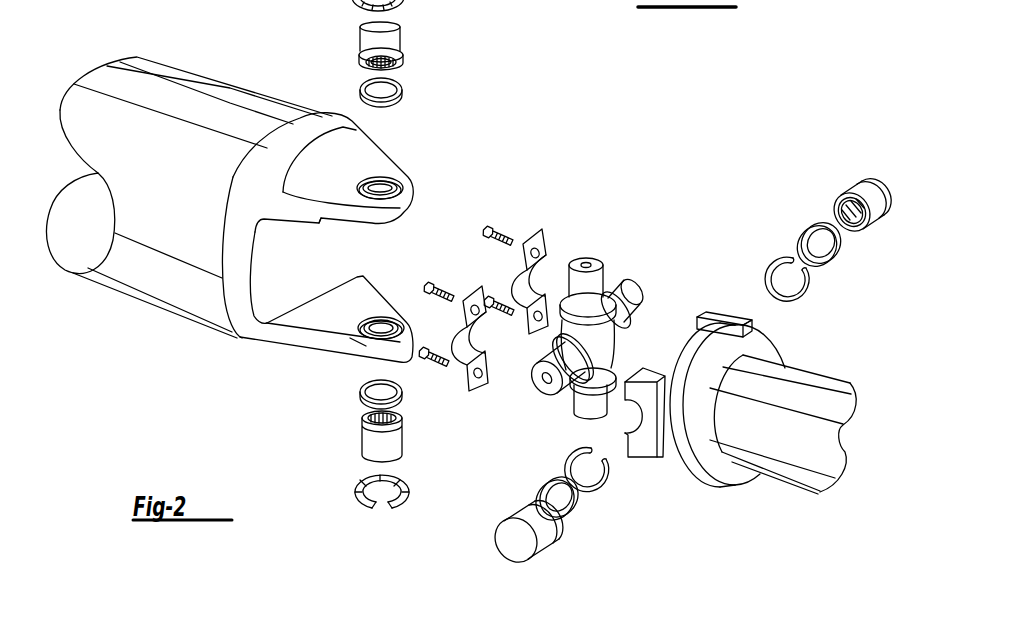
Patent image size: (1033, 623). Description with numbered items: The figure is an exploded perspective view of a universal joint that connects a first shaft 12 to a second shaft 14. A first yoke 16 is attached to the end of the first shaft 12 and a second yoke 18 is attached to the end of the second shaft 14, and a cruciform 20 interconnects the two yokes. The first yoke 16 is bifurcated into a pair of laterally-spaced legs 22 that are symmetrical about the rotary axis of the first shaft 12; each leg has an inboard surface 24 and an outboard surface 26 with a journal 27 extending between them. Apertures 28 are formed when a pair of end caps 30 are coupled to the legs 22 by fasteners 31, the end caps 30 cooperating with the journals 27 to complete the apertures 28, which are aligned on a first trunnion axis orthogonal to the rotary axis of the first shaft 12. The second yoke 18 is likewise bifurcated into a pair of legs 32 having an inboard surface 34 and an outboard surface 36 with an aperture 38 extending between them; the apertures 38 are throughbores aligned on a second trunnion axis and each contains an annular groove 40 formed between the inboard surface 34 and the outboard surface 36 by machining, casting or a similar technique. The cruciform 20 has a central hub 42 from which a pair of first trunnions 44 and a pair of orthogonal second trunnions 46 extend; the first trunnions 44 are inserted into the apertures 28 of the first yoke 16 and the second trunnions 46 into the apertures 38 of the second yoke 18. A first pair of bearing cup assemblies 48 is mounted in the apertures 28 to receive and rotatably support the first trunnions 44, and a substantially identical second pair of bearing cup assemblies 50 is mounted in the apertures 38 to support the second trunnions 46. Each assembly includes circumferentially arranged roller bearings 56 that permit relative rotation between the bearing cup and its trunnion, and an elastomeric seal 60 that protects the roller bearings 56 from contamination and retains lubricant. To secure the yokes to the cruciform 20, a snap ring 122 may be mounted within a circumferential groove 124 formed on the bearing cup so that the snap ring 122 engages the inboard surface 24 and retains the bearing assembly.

The first shaft 12 is at (810, 378).
The second shaft 14 is at (246, 214).
The first yoke 16 is at (683, 382).
The second yoke 18 is at (291, 217).
The cruciform 20 is at (584, 337).
The legs 22 is at (700, 316).
The inboard surface 24 is at (698, 321).
The outboard surface 26 is at (724, 322).
The journal 27 is at (629, 446).
The apertures 28 is at (634, 420).
The end caps 30 is at (545, 240).
The fasteners 31 is at (484, 228).
The legs 32 is at (362, 216).
The inboard surface 34 is at (397, 341).
The outboard surface 36 is at (363, 158).
The aperture 38 is at (397, 190).
The annular groove 40 is at (388, 184).
The central hub 42 is at (615, 334).
The first trunnions 44 is at (629, 290).
The second trunnions 46 is at (600, 280).
The first bearing cup assemblies 48 is at (658, 345).
The second bearing cup assemblies 50 is at (361, 254).
The roller bearings 56 is at (354, 242).
The elastomeric seal 60 is at (402, 87).
The snap ring 122 is at (772, 264).
The circumferential groove 124 is at (853, 182).